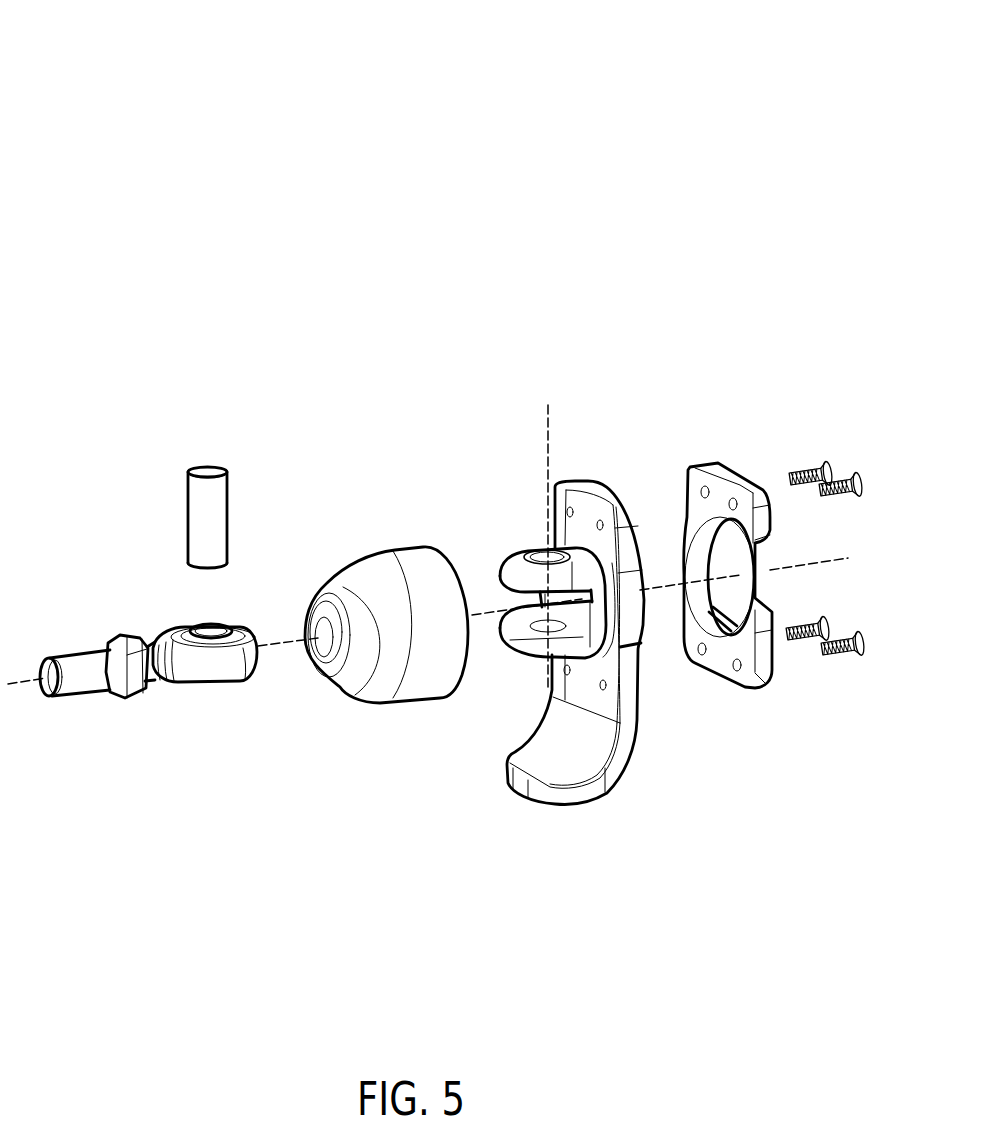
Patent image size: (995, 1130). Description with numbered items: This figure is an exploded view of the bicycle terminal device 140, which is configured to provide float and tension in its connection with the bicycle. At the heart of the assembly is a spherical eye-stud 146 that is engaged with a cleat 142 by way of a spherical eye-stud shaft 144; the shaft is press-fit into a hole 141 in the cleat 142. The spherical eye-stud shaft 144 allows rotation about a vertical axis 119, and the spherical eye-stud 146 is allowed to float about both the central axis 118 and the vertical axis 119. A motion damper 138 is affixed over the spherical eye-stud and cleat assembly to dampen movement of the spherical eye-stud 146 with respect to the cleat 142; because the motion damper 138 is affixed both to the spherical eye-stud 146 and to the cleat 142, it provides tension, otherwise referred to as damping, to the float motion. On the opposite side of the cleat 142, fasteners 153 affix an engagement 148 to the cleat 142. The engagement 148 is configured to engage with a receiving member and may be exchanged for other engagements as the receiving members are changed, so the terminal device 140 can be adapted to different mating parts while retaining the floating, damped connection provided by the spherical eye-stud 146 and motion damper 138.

The central axis 118 is at (28, 677).
The vertical axis 119 is at (547, 410).
The motion damper 138 is at (377, 580).
The bicycle terminal device 140 is at (117, 47).
The hole 141 is at (538, 553).
The cleat 142 is at (593, 497).
The spherical eye-stud shaft 144 is at (210, 537).
The spherical eye-stud 146 is at (188, 662).
The engagement 148 is at (732, 480).
The fasteners 153 is at (855, 478).